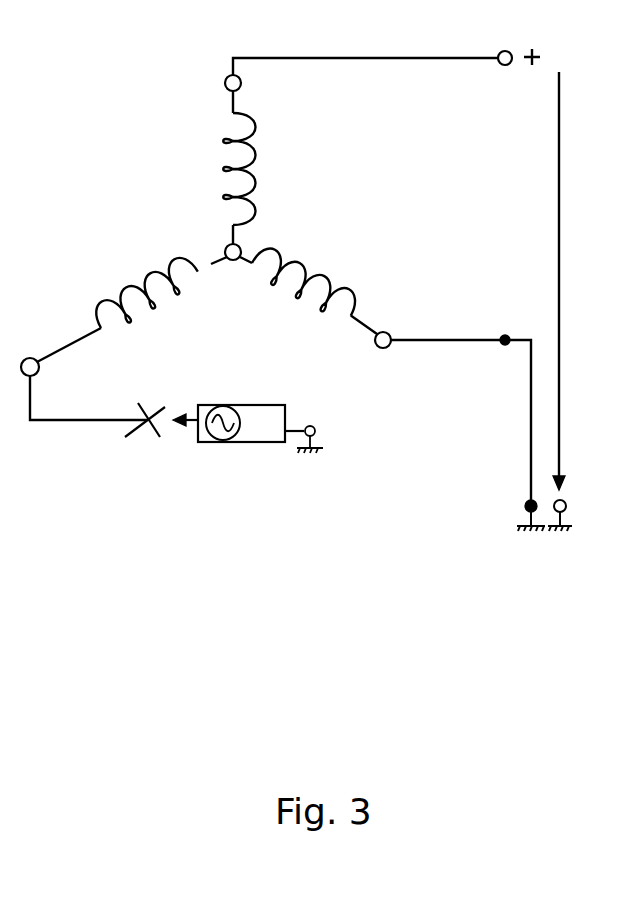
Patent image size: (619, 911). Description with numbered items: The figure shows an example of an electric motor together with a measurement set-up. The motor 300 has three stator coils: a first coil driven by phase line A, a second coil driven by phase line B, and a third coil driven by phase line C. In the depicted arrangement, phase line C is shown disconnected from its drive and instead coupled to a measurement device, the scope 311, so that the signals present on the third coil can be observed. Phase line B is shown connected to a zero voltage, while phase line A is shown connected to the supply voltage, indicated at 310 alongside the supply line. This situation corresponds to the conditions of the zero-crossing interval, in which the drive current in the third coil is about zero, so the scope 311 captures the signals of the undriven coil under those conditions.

The motor 300 is at (114, 181).
The DC bus voltage measurement 310 is at (552, 111).
The measurement device (scope) 311 is at (262, 442).